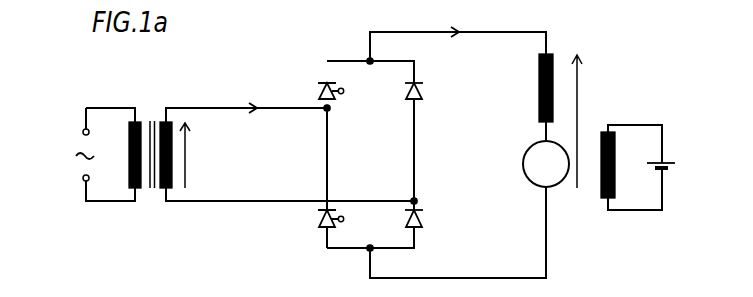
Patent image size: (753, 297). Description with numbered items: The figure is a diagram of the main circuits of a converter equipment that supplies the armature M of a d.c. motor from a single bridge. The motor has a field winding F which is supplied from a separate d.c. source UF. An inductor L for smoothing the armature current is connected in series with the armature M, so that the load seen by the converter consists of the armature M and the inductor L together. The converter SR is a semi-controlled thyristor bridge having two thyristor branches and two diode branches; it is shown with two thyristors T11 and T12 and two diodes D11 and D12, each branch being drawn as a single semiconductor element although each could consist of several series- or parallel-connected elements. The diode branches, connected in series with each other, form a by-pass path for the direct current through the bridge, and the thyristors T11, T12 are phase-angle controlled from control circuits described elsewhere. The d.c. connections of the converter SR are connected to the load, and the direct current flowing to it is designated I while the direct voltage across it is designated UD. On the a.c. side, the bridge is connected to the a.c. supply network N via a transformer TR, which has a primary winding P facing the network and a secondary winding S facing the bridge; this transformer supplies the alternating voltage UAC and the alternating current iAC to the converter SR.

The a.c. supply network N is at (78, 151).
The transformer TR is at (151, 158).
The primary winding P is at (139, 190).
The secondary winding S is at (162, 190).
The alternating voltage UAC is at (201, 154).
The alternating current iAC is at (254, 97).
The converter SR is at (371, 183).
The thyristor T11 is at (333, 104).
The thyristor T12 is at (320, 232).
The diode D11 is at (410, 103).
The diode D12 is at (425, 219).
The direct current I is at (455, 19).
The inductor L is at (536, 86).
The direct voltage UD is at (590, 120).
The armature M is at (546, 164).
The field winding F is at (598, 188).
The d.c. source UF is at (670, 170).